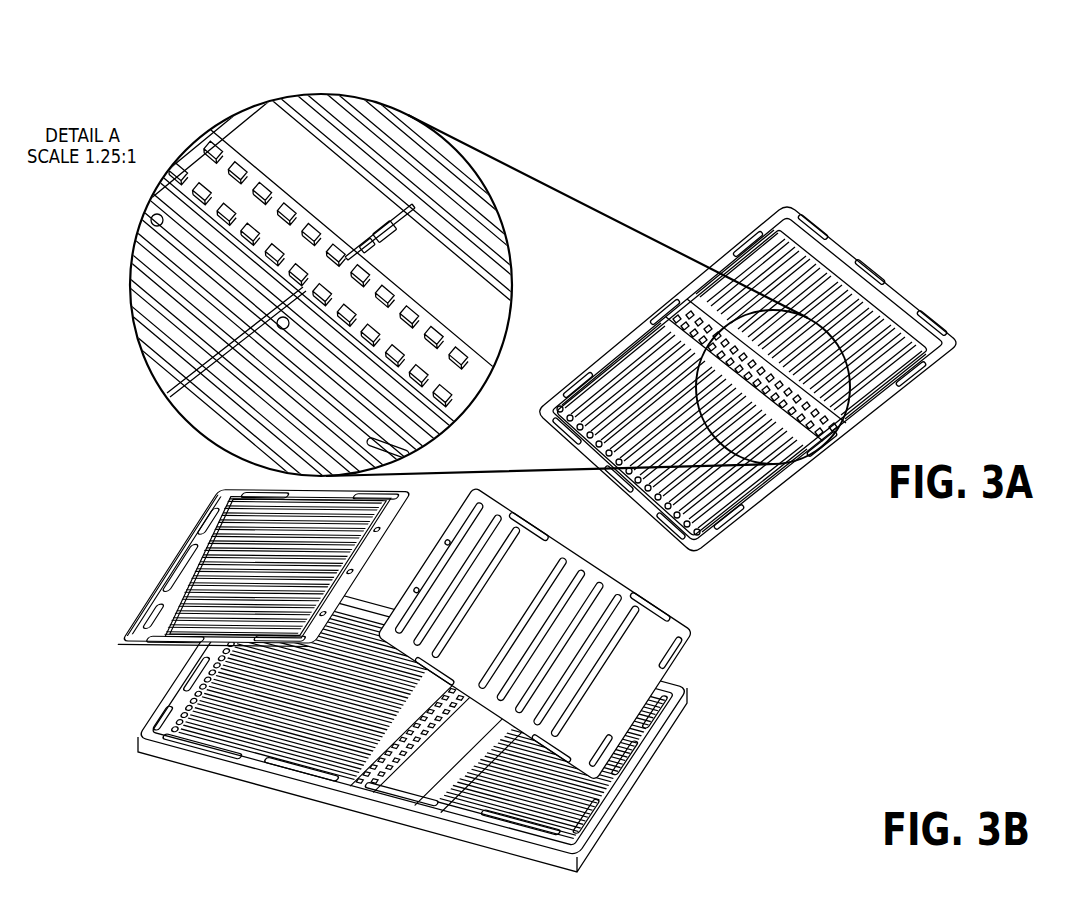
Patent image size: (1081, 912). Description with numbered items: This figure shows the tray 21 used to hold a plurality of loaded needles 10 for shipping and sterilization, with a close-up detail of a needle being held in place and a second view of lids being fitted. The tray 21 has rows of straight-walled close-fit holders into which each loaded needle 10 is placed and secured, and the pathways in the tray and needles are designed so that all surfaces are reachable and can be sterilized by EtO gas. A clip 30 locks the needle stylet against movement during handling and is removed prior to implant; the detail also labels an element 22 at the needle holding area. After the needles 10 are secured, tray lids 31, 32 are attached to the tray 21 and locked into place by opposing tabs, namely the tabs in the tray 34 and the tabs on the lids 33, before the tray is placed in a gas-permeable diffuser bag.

In FIG. 3A, the loaded needle 10 is at (392, 208).
In FIG. 3A, the tray 21 is at (826, 263).
In FIG. 3A, the clip 22 is at (375, 272).
In FIG. 3A, the clip 30 is at (407, 228).
In FIG. 3B, the tray lid 31 is at (642, 647).
In FIG. 3B, the tray lid 32 is at (158, 601).
In FIG. 3B, the lid tab 33 is at (575, 753).
In FIG. 3B, the tray tab 34 is at (303, 775).